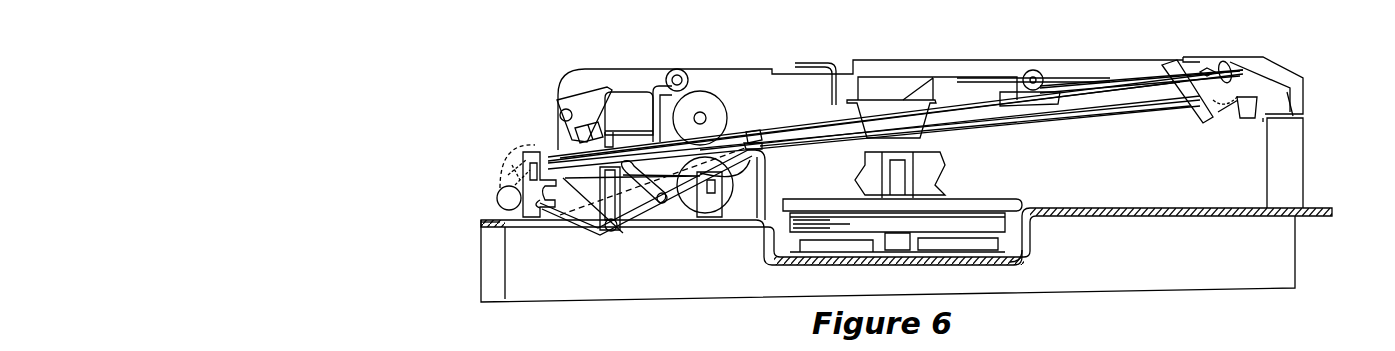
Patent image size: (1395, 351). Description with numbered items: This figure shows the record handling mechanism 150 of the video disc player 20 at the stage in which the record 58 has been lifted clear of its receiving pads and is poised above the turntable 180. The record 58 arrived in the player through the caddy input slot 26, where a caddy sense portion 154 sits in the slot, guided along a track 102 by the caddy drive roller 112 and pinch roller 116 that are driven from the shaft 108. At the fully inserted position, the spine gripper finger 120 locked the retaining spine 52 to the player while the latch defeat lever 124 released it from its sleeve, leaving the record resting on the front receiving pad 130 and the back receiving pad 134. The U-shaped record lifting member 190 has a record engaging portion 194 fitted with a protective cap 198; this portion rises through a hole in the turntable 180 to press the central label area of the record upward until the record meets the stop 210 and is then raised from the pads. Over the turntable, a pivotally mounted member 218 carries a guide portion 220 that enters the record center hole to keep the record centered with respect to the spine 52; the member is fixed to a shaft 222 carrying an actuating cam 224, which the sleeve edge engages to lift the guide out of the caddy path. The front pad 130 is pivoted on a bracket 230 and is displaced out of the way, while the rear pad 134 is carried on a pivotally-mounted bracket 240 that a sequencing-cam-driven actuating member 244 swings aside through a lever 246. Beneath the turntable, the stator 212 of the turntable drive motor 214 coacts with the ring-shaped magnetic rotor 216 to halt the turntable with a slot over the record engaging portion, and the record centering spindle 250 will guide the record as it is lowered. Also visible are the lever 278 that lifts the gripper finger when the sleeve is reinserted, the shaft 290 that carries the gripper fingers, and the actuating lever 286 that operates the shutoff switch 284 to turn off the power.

The video disc player 20 is at (1239, 256).
The caddy input slot 26 is at (1292, 74).
The record retaining spine 52 is at (1158, 98).
The record 58 is at (812, 128).
The track 102 is at (1088, 110).
The shaft 108 is at (686, 76).
The caddy drive roller 112 is at (704, 112).
The pinch roller 116 is at (748, 175).
The spine gripper finger 120 is at (512, 160).
The latch defeat lever 124 is at (582, 130).
The front record receiving pad 130 is at (1214, 118).
The back record receiving pad 134 is at (608, 222).
The record handling mechanism 150 is at (721, 239).
The caddy sense portion 154 is at (1296, 100).
The turntable 180 is at (995, 198).
The record lifting member 190 is at (486, 226).
The record engaging portion 194 is at (652, 230).
The cap 198 is at (756, 132).
The stop 210 is at (629, 100).
The stator 212 is at (970, 246).
The turntable drive motor 214 is at (1030, 255).
The magnetic rotor 216 is at (1018, 228).
The pivotally mounted member 218 is at (978, 78).
The guide portion 220 is at (860, 104).
The shaft 222 is at (1044, 78).
The actuating cam 224 is at (1020, 100).
The bracket 230 is at (1176, 64).
The pivotally-mounted bracket 240 is at (610, 232).
The actuating member 244 is at (690, 218).
The lever 246 is at (575, 222).
The record centering spindle 250 is at (932, 176).
The lever 278 is at (508, 176).
The shutoff switch 284 is at (597, 100).
The shutoff switch actuating lever 286 is at (560, 112).
The shaft 290 is at (508, 198).